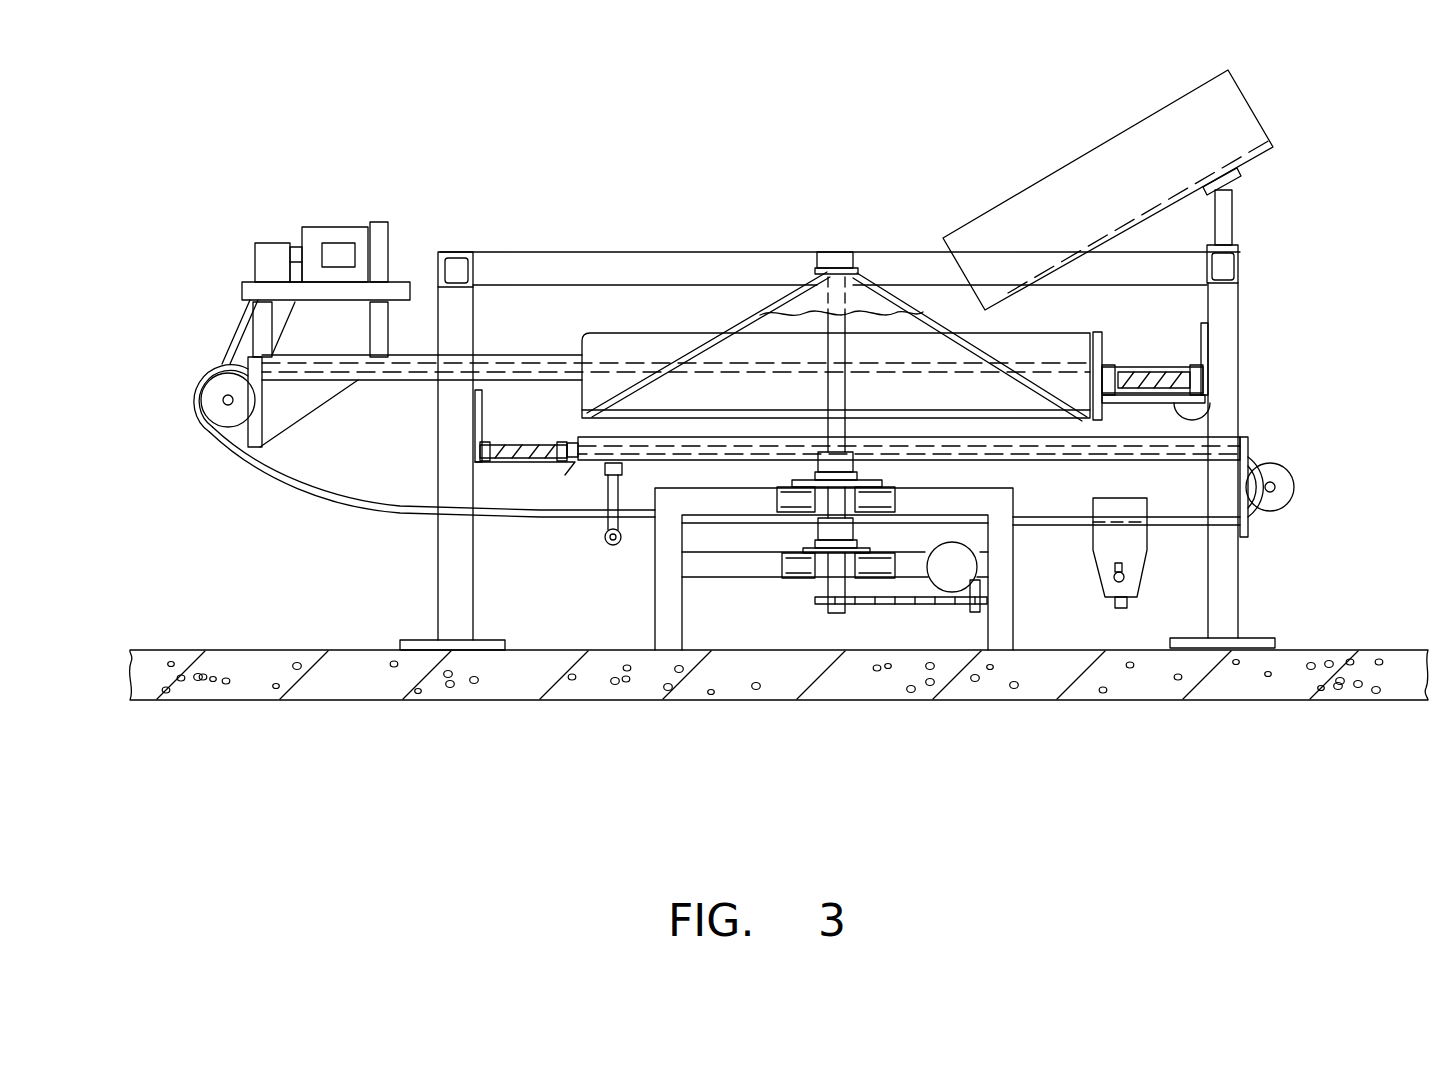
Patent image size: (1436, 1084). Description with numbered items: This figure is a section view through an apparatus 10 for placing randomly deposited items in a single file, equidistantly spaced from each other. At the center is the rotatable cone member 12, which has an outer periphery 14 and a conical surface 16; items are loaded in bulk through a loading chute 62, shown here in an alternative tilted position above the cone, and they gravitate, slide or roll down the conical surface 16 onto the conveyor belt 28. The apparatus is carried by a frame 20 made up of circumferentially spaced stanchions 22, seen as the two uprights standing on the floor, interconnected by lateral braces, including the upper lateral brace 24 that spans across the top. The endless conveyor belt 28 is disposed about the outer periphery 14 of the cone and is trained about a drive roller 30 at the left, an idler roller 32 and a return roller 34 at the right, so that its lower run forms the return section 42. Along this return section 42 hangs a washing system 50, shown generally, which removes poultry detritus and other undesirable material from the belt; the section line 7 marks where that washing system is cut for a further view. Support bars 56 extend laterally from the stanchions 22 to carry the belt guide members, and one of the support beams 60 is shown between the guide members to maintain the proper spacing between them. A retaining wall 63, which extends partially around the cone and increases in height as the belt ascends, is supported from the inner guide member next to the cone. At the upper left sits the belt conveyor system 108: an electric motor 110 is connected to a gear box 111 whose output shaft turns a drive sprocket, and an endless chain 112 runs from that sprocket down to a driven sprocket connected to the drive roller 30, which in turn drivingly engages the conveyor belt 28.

The section line 7- 7 is at (1120, 487).
The apparatus 10 is at (440, 197).
The rotatable cone member 12 is at (732, 323).
The outer periphery 14 is at (1053, 415).
The conical surface 16 is at (920, 310).
The frame 20 is at (1242, 295).
The stanchion 22 is at (1240, 325).
The upper lateral brace 24 is at (518, 250).
The conveyor belt 28 is at (272, 468).
The drive roller 30 is at (212, 402).
The idler roller 32 is at (607, 547).
The return roller 34 is at (1282, 500).
The return section 42 is at (390, 510).
The washing system 50 is at (1138, 578).
The support bar 56 is at (1173, 412).
The support beam 60 is at (605, 470).
The loading chute 62 is at (1253, 113).
The retaining wall 63 is at (1105, 350).
The belt conveyor system 108 is at (246, 237).
The electric motor 110 is at (327, 227).
The gear box 111 is at (270, 243).
The endless chain 112 is at (222, 350).